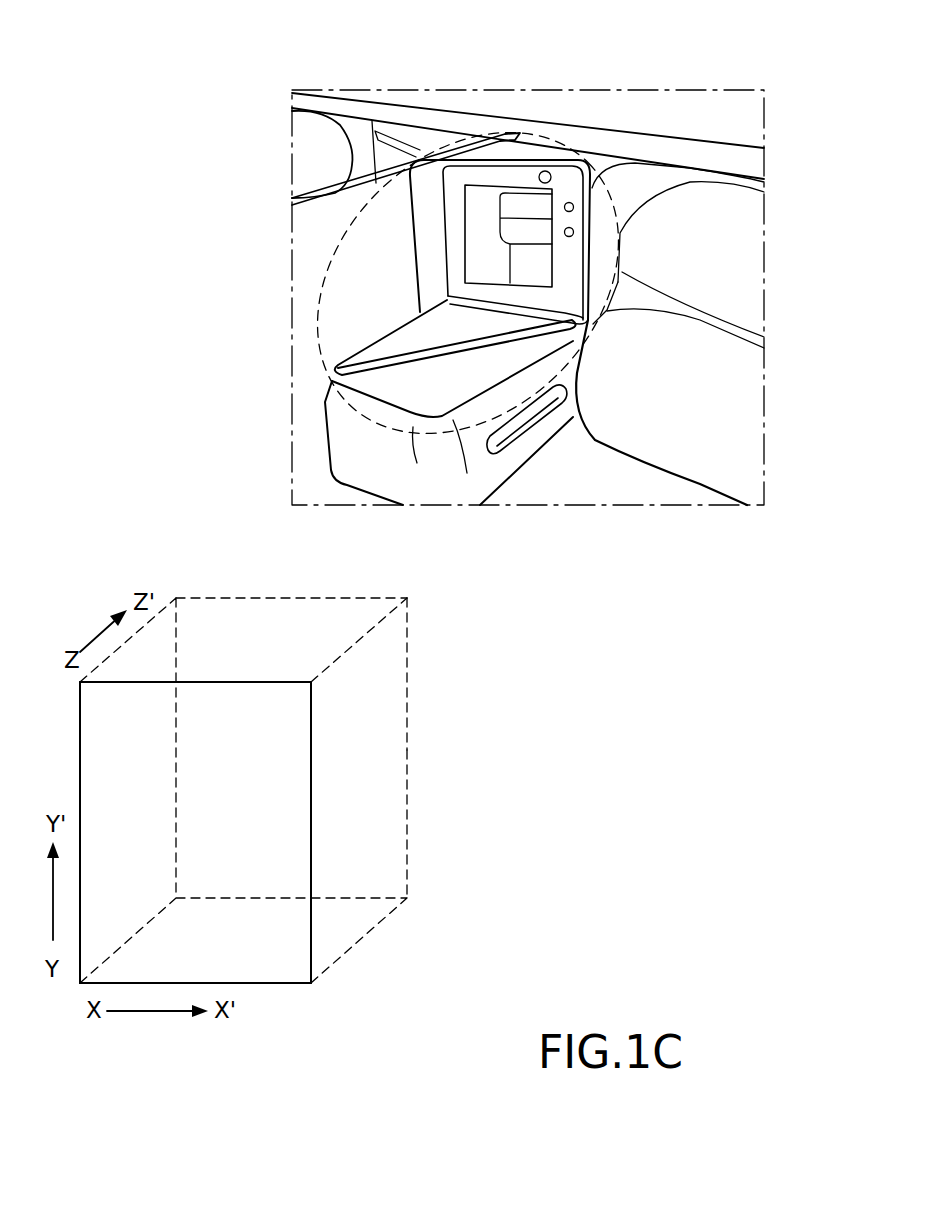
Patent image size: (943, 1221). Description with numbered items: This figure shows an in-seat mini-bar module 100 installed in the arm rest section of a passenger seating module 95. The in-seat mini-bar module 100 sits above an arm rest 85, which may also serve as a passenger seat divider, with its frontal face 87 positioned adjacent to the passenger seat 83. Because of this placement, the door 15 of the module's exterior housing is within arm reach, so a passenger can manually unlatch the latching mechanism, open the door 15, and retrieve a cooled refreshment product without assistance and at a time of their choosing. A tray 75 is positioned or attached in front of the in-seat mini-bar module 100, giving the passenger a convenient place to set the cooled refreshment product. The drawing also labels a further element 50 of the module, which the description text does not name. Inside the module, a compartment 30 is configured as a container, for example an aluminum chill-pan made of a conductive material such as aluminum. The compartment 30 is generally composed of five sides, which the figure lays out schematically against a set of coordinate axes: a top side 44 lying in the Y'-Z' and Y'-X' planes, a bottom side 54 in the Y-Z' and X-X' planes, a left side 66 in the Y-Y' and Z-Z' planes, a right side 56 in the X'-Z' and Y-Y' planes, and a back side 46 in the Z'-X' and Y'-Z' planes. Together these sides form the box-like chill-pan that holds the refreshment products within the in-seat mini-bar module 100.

The door 15 is at (563, 293).
The compartment 30 is at (475, 217).
The display panel bezel 50 is at (480, 170).
The in-seat mini-bar module 100 is at (513, 223).
The frontal face 87 is at (570, 272).
The passenger seat 83 is at (680, 372).
The tray 75 is at (405, 349).
The arm rest 85 is at (343, 431).
The passenger seating module 95 is at (325, 262).
The top side 44 is at (228, 623).
The back side 46 is at (372, 678).
The right side 56 is at (367, 784).
The left side 66 is at (115, 772).
The bottom side 54 is at (278, 974).